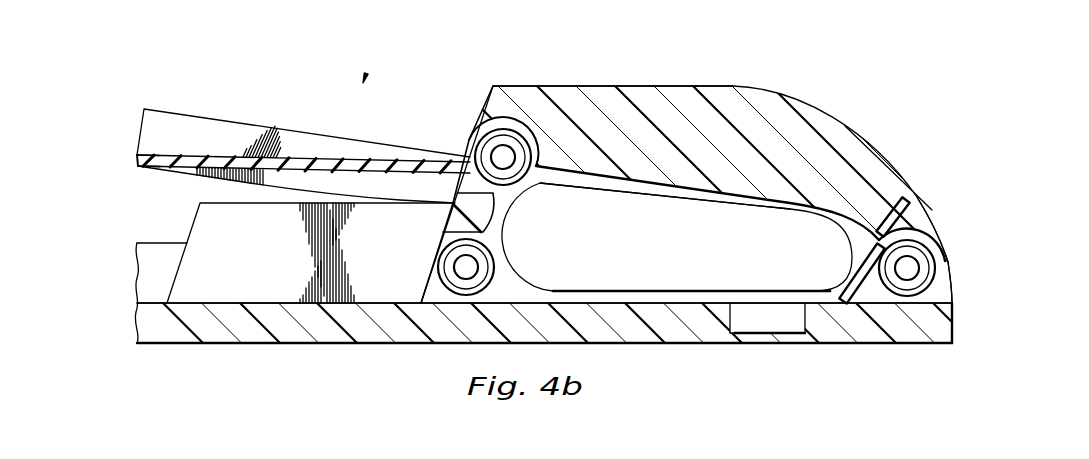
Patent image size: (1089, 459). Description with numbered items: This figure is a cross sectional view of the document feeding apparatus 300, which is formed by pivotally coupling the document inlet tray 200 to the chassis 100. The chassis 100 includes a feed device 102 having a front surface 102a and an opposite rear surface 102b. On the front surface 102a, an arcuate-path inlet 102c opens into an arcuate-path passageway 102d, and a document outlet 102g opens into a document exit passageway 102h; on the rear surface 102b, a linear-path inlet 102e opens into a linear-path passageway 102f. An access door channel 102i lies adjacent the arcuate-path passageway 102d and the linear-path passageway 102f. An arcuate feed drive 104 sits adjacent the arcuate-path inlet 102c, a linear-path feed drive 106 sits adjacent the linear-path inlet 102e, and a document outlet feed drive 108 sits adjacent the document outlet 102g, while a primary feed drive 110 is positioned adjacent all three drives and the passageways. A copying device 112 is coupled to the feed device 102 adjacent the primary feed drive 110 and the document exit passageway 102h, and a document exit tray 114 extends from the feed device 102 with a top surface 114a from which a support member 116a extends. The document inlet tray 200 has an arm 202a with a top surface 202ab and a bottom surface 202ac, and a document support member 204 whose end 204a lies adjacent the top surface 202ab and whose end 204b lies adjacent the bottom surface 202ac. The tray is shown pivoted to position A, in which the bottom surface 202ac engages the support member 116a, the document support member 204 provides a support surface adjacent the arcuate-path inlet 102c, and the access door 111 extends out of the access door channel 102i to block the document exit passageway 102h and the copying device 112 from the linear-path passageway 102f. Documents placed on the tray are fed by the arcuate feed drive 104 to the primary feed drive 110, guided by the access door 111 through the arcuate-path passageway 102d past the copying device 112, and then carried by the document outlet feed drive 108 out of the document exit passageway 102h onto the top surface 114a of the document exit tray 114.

The chassis 100 is at (602, 210).
The feed device 102 is at (818, 103).
The front surface 102a is at (485, 107).
The rear surface 102b is at (947, 240).
The arcuate-path inlet 102c is at (470, 138).
The arcuate-path passageway 102d is at (752, 203).
The linear-path inlet 102e is at (940, 285).
The linear-path passageway 102f is at (877, 290).
The document outlet 102g is at (433, 287).
The document exit passageway 102h is at (678, 297).
The access door channel 102i is at (913, 213).
The arcuate feed drive 104 is at (510, 173).
The linear-path feed drive 106 is at (915, 282).
The document outlet feed drive 108 is at (445, 255).
The primary feed drive 110 is at (622, 251).
The access door 111 is at (850, 282).
The copying device 112 is at (755, 323).
The document exit tray 114 is at (250, 343).
The top surface 114a is at (213, 302).
The support member 116a is at (193, 227).
The document inlet tray 200 is at (263, 179).
The arm 202a is at (178, 128).
The top surface 202ab is at (245, 127).
The bottom surface 202ac is at (277, 190).
The document support member 204 is at (302, 157).
The end 204a is at (440, 172).
The end 204b is at (137, 158).
The document feeding apparatus 300 is at (637, 72).
The position A is at (363, 83).